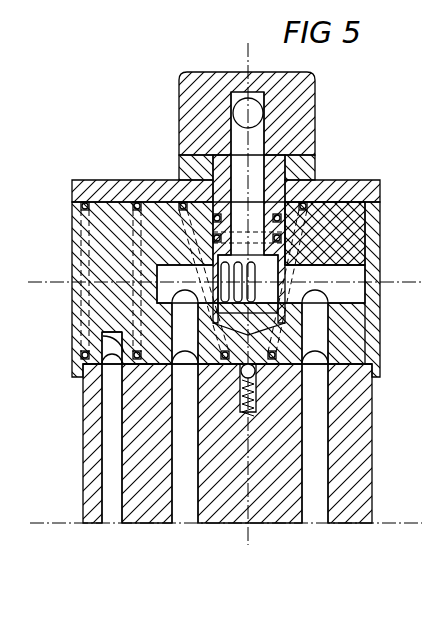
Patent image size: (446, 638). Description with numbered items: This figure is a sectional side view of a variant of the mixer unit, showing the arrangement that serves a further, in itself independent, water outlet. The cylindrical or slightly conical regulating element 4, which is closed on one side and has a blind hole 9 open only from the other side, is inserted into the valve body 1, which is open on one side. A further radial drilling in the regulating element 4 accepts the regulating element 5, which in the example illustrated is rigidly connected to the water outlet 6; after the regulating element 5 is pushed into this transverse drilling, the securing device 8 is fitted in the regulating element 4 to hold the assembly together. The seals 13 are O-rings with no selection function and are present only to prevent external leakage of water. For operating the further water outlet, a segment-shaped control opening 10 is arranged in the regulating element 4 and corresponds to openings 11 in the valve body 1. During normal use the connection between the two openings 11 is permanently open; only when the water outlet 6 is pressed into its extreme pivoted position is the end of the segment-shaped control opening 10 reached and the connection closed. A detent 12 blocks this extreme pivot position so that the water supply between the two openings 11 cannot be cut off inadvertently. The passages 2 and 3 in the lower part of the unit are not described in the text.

The valve body 1 is at (350, 413).
The port 2 is at (187, 515).
The port 3 is at (316, 515).
The regulating element 4 is at (100, 258).
The regulating element 5 is at (368, 224).
The water outlet 6 is at (195, 73).
The securing device 8 is at (315, 157).
The blind hole 9 is at (345, 290).
The control opening 10 is at (100, 345).
The openings 11 is at (113, 515).
The detent 12 is at (250, 376).
The seals 13 is at (340, 198).